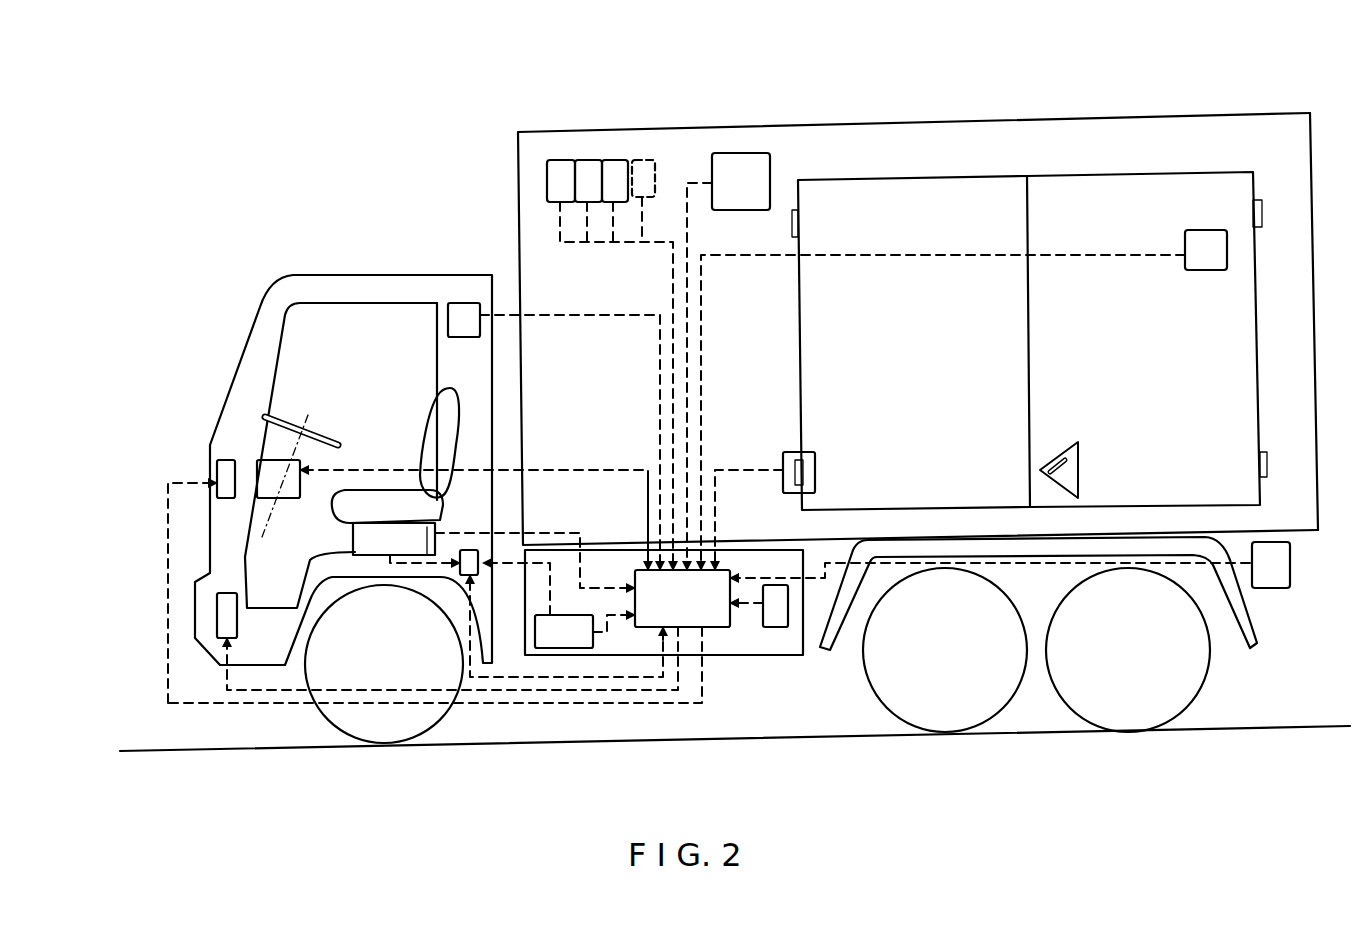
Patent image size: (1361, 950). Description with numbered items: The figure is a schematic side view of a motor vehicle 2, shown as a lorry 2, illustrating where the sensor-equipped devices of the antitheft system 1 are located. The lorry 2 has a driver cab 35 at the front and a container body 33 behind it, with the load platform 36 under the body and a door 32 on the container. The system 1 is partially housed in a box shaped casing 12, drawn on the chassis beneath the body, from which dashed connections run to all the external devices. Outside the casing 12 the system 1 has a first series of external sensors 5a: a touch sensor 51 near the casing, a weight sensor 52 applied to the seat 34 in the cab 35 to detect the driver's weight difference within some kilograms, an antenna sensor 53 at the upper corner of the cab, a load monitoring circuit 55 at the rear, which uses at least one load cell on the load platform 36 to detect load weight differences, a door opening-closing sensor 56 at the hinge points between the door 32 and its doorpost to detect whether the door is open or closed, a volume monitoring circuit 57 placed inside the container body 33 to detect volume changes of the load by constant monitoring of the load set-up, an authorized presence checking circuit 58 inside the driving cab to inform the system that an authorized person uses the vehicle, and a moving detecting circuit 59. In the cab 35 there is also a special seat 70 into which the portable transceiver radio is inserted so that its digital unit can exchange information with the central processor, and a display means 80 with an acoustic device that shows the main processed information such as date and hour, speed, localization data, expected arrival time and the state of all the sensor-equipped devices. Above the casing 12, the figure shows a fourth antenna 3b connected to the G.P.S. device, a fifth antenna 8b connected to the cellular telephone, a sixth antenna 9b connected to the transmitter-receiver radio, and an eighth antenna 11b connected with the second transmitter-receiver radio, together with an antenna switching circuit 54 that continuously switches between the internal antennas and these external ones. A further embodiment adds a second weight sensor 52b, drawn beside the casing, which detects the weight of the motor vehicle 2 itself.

The antitheft system 1 is at (762, 680).
The motor vehicle 2 is at (175, 268).
The first series of external sensors 5a is at (907, 97).
The fourth antenna 3b is at (555, 175).
The fifth antenna 8b is at (590, 175).
The sixth antenna 9b is at (615, 173).
The eighth antenna 11b is at (642, 173).
The box shaped casing 12 is at (664, 602).
The door 32 is at (1087, 339).
The container body 33 is at (885, 343).
The seat 34 is at (422, 440).
The driver cab 35 is at (287, 293).
The load platform 36 is at (1302, 522).
The touch sensor 51 is at (560, 642).
The weight sensor 52 is at (355, 533).
The second weight sensor 52b is at (782, 620).
The antenna sensor 53 is at (458, 315).
The antenna switching circuit 54 is at (738, 173).
The load monitoring circuit 55 is at (1277, 580).
The door opening-closing sensor 56 is at (810, 463).
The volume monitoring circuit 57 is at (1205, 243).
The authorized presence checking circuit 58 is at (265, 468).
The moving detecting circuit 59 is at (458, 566).
The seat for portable transceiver radio 70 is at (222, 615).
The display means 80 is at (215, 465).